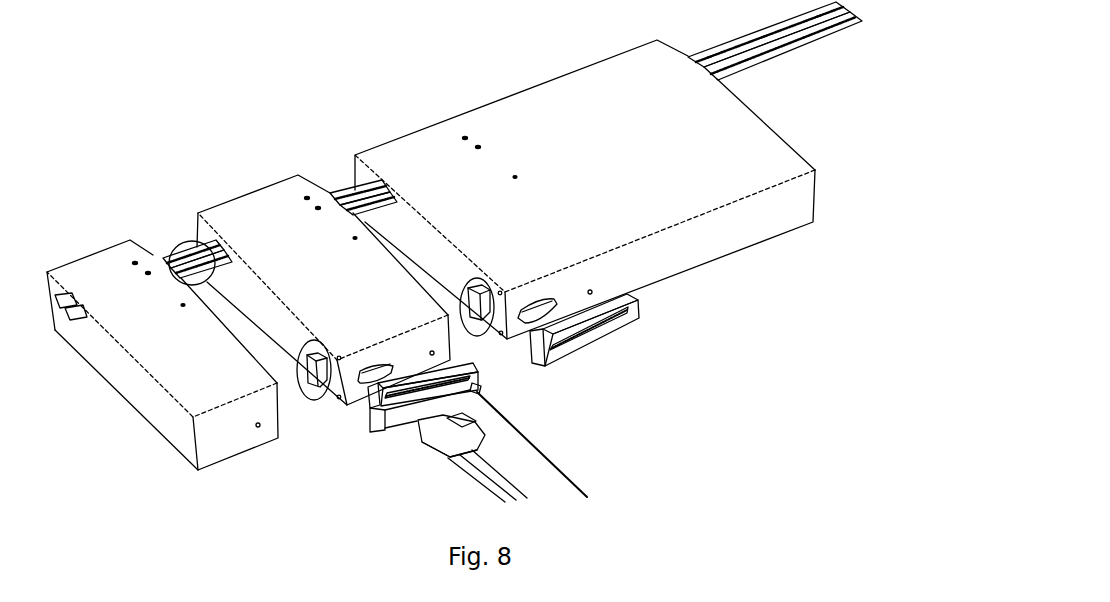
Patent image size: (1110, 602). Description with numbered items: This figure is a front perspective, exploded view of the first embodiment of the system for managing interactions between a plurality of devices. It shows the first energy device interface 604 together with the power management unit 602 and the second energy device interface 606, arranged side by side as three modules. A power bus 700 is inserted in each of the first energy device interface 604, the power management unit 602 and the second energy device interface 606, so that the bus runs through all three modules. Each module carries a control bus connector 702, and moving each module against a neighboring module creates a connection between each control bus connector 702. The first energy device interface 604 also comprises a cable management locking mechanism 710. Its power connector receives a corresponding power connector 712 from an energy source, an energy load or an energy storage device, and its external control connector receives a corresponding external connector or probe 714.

The power management unit 602 is at (162, 360).
The first energy device interface 604 is at (323, 275).
The second energy device interface 606 is at (585, 196).
The power bus 700 is at (507, 143).
The control bus connector 702 is at (411, 365).
The cable management locking mechanism 710 is at (424, 423).
The corresponding power connector 712 is at (472, 467).
The external connector or probe 714 is at (534, 444).